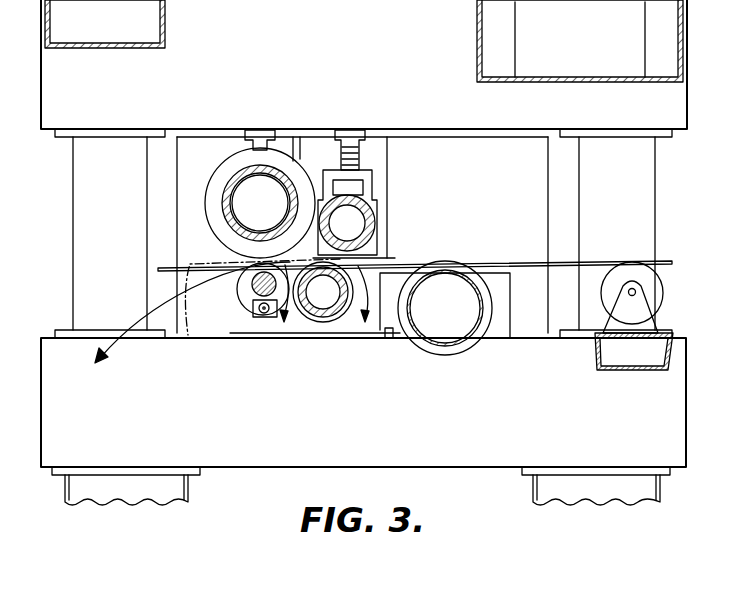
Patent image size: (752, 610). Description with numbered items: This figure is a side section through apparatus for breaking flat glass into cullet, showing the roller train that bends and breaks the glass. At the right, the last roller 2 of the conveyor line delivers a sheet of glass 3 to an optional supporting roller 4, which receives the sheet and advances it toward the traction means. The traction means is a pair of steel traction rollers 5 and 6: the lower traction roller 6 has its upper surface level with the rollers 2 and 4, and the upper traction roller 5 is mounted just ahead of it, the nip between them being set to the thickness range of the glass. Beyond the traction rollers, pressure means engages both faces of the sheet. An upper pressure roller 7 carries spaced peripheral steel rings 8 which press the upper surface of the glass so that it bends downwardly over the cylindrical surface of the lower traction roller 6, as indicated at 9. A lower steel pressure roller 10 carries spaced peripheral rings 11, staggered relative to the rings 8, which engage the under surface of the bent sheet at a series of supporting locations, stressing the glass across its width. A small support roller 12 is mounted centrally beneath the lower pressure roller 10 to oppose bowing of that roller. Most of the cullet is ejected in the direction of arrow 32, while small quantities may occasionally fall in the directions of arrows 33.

The last roller of the conveyor line 2 is at (627, 270).
The sheet of glass 3 is at (535, 258).
The supporting roller 4 is at (472, 343).
The upper traction roller 5 is at (330, 170).
The lower traction roller 6 is at (326, 322).
The upper pressure roller 7 is at (234, 170).
The peripheral steel rings 8 is at (223, 167).
The downwardly bent sheet path 9 is at (184, 336).
The lower pressure roller 10 is at (252, 296).
The peripheral steel rings 11 is at (246, 290).
The small support roller 12 is at (264, 313).
The arrow 32 is at (125, 325).
The arrows 33 is at (295, 318).